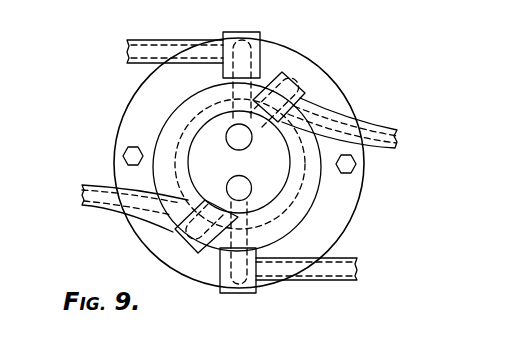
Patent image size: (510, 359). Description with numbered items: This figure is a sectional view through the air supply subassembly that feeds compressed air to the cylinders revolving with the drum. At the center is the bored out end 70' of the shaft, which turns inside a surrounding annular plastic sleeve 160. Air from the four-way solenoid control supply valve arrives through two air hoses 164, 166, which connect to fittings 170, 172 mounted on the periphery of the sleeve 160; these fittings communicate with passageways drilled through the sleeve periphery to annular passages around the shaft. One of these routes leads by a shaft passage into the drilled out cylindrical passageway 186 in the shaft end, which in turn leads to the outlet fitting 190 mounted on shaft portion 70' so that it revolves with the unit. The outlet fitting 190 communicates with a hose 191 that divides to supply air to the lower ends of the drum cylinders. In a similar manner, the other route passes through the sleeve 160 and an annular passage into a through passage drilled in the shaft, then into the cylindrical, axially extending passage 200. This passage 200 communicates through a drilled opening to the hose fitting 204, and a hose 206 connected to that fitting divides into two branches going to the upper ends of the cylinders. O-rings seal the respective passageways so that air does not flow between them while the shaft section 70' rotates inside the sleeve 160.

The annular plastic sleeve 160 is at (220, 90).
The bored out end of shaft 70' is at (174, 157).
The drilled out cylindrical passageway 186 is at (238, 136).
The cylindrical axially extending passage 200 is at (243, 189).
The air hose 166 is at (168, 48).
The fitting 172 is at (250, 34).
The outlet fitting 190 is at (298, 74).
The hose 191 is at (375, 130).
The air hose 164 is at (337, 259).
The fitting 170 is at (246, 291).
The hose fitting 204 is at (177, 232).
The hose 206 is at (90, 184).